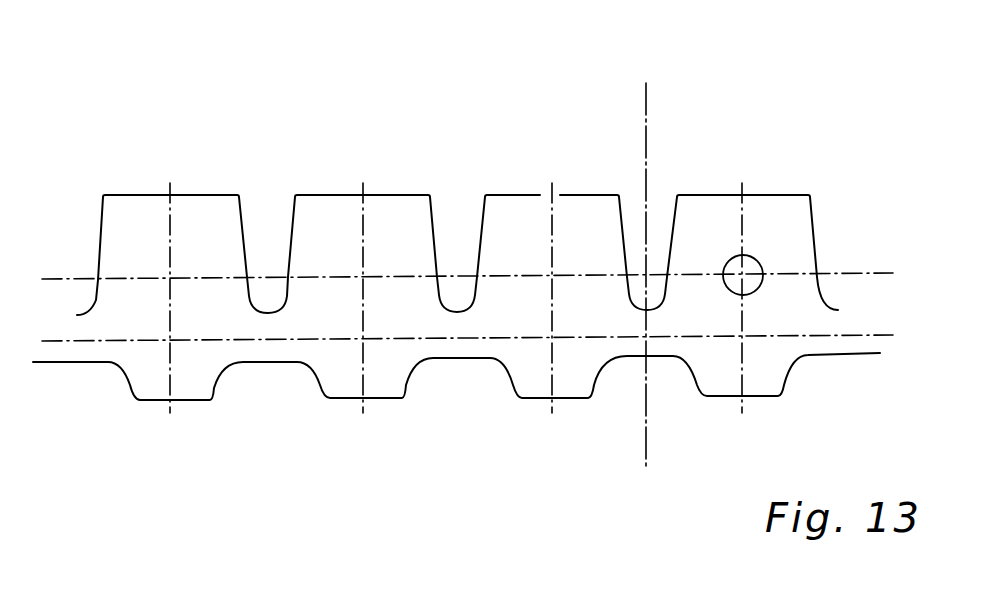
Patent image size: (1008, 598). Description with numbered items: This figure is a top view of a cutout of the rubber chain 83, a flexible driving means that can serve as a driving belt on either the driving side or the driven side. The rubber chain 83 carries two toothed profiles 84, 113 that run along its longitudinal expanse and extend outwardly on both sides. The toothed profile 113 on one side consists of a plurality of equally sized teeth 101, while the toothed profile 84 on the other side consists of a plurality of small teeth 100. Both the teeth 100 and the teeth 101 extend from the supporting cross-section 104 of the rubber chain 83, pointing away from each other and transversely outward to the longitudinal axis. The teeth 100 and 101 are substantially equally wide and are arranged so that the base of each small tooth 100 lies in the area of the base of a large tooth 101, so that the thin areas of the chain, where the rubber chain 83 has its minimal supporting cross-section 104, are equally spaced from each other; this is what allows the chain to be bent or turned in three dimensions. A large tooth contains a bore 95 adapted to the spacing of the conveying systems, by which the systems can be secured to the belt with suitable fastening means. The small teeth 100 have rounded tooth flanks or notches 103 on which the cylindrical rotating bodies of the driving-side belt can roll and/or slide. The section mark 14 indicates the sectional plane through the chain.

The rubber chain 83 is at (480, 171).
The toothed profile 84 is at (456, 458).
The teeth 101 is at (127, 217).
The toothed profile 113 is at (728, 165).
The bore 95 is at (752, 266).
The small teeth 100 is at (523, 383).
The rounded tooth flanks or notches 103 is at (500, 370).
The supporting cross-section 104 is at (260, 350).
The section line XIV 14 is at (645, 107).